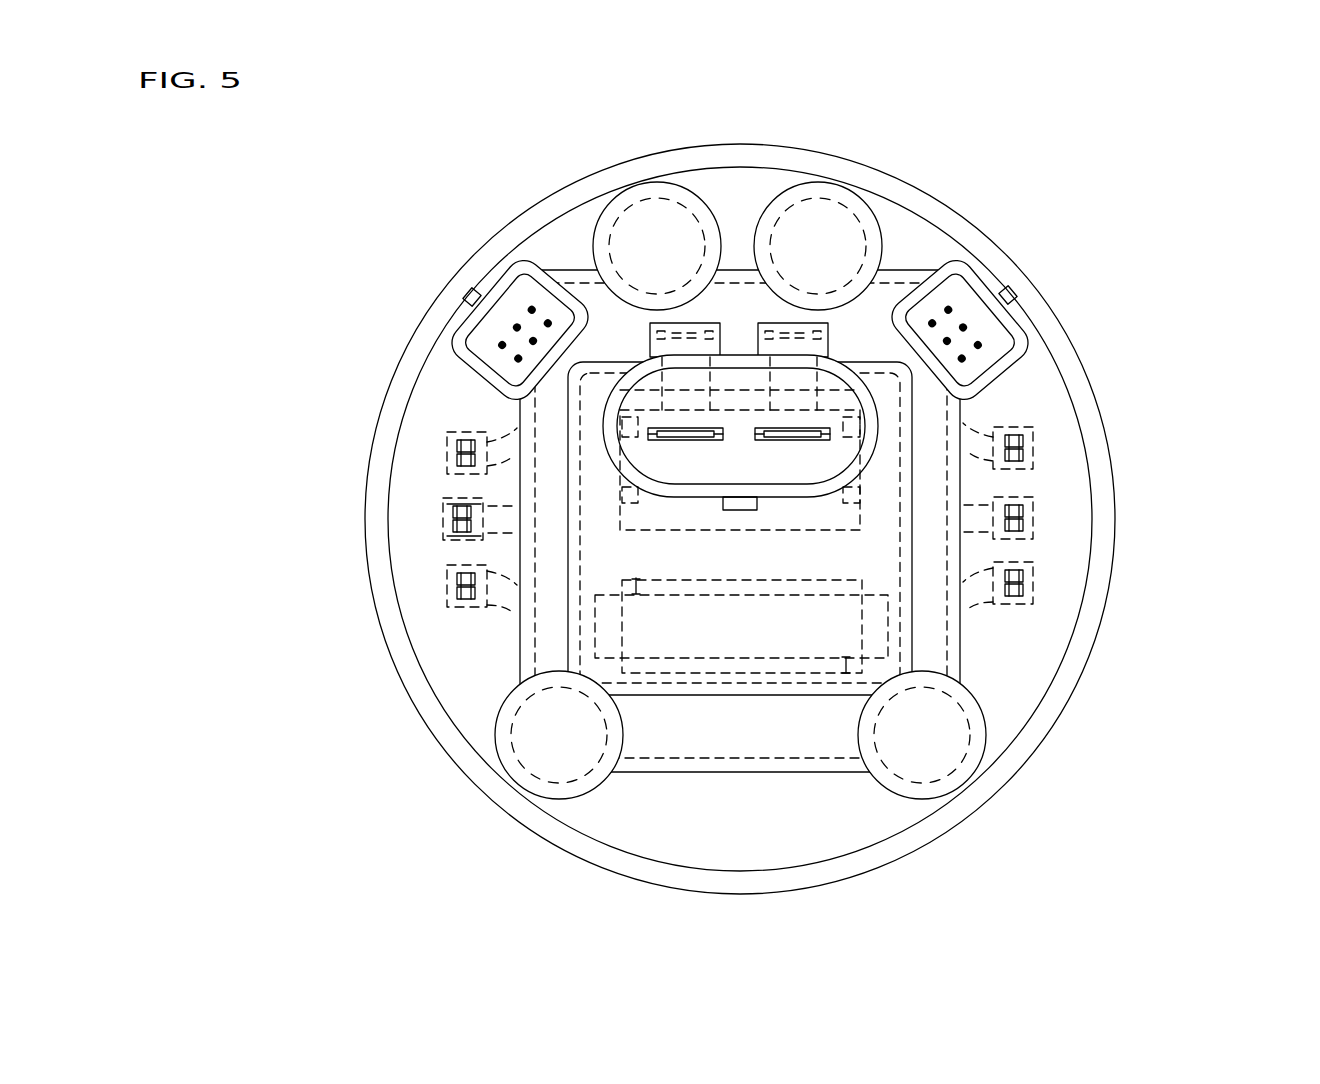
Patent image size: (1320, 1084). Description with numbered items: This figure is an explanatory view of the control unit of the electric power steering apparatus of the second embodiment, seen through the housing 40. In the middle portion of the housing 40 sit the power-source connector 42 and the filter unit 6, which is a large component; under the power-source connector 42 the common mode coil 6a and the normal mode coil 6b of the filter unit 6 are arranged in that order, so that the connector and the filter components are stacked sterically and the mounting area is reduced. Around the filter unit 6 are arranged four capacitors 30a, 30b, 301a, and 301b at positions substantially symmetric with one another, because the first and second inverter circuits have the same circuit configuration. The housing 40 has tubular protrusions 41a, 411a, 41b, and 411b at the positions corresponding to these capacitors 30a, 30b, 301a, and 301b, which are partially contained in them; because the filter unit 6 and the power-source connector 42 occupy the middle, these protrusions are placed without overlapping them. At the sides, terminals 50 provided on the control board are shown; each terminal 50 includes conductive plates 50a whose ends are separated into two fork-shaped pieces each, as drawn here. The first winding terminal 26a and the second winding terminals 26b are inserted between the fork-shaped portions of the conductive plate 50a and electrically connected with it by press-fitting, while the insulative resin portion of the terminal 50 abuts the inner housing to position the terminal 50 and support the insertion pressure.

The housing 40 is at (440, 290).
The tubular protrusion 411a is at (597, 225).
The tubular protrusion 411b is at (882, 233).
The capacitor 301a is at (655, 242).
The capacitor 301b is at (825, 212).
The common mode coil 6a is at (823, 403).
The power-source connector 42 is at (873, 408).
The first winding terminal 26a is at (452, 463).
The second winding terminal 26b is at (1030, 438).
The conductive plate 50a is at (448, 528).
The terminal 50 is at (450, 597).
The filter unit 6 is at (908, 632).
The tubular protrusion 41a is at (497, 730).
The tubular protrusion 41b is at (985, 722).
The capacitor 30a is at (548, 758).
The capacitor 30b is at (925, 770).
The normal mode coil 6b is at (777, 642).